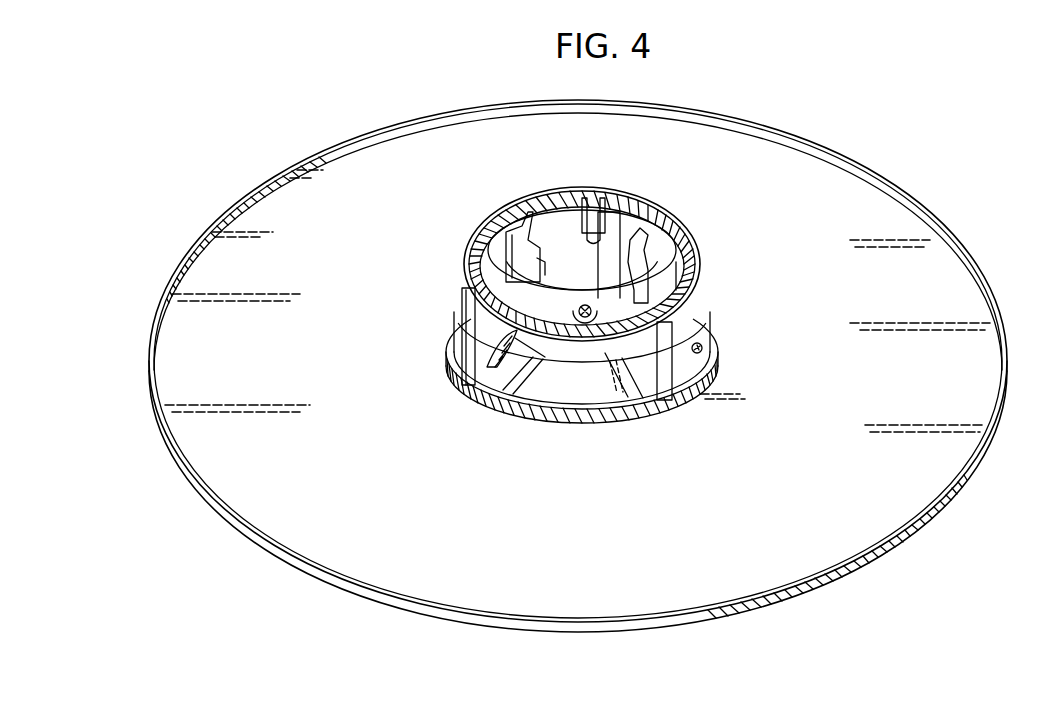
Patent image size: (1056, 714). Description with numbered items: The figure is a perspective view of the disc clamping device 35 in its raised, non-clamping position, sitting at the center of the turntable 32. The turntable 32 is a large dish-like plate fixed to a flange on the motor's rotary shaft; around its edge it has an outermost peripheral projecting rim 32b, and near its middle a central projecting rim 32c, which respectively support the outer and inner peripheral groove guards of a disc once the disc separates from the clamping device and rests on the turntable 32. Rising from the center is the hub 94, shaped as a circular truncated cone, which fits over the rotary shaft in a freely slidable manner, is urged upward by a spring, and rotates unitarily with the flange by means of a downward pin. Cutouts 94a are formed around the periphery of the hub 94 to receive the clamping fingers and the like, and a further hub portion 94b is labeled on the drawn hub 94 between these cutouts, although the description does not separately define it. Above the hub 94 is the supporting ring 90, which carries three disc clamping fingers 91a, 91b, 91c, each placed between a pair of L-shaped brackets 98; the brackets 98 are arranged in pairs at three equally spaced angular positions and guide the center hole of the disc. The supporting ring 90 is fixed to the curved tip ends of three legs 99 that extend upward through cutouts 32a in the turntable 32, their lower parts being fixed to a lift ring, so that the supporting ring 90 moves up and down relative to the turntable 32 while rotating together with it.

The turntable 32 is at (746, 119).
The cutouts 32a is at (479, 402).
The outermost peripheral projecting rim 32b is at (892, 186).
The central projecting rim 32c is at (714, 336).
The disc clamping device 35 is at (848, 103).
The supporting ring 90 is at (688, 241).
The disc clamping finger 91a is at (537, 258).
The disc clamping finger 91b is at (596, 200).
The disc clamping finger 91c is at (683, 277).
The hub 94 is at (573, 397).
The cutouts 94a is at (607, 297).
The drum center segment 94b is at (547, 395).
The L-shaped brackets 98 is at (527, 213).
The legs 99 is at (617, 235).